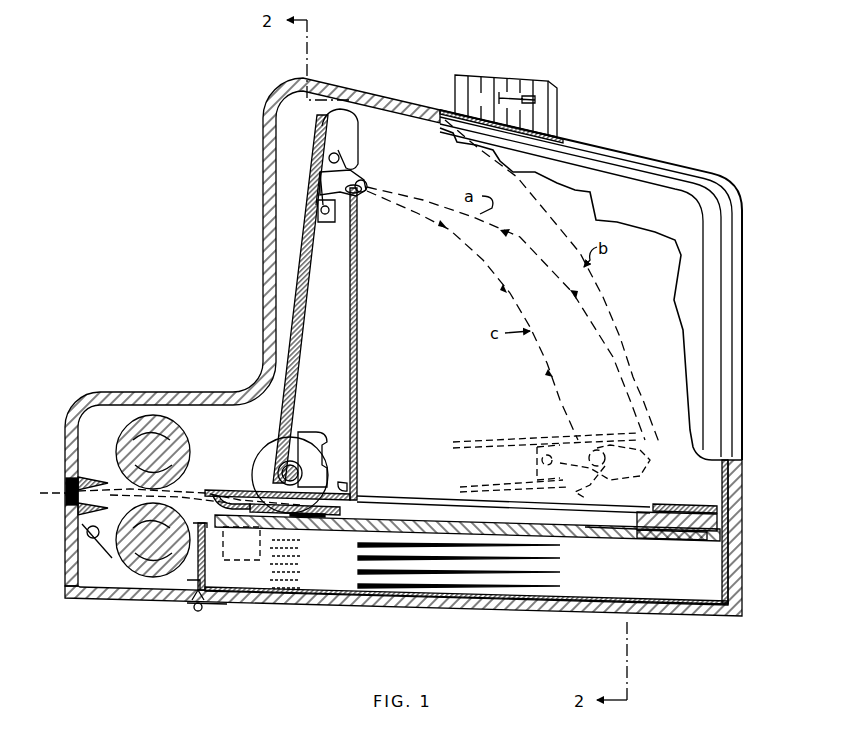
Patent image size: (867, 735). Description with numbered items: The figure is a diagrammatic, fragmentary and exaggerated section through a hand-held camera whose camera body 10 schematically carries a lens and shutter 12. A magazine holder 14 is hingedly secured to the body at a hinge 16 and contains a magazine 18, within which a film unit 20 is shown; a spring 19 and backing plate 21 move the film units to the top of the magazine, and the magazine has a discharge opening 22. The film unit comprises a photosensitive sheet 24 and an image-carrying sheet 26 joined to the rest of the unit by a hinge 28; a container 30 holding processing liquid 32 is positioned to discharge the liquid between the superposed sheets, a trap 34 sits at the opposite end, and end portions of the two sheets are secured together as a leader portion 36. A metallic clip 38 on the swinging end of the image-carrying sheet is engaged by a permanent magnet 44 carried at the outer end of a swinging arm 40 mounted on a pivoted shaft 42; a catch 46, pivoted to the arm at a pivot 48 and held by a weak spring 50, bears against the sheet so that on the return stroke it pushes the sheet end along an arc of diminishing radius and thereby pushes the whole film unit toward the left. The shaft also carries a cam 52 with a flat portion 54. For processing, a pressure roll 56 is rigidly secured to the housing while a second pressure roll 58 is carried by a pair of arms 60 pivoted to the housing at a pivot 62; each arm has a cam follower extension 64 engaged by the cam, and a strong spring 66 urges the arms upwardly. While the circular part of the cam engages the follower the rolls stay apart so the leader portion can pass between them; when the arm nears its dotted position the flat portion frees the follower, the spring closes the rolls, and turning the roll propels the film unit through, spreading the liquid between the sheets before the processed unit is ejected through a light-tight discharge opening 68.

The camera body 10 is at (707, 186).
The lens and shutter 12 is at (552, 108).
The magazine holder 14 is at (673, 608).
The hinge 16 is at (198, 612).
The magazine 18 is at (700, 503).
The spring 19 is at (553, 568).
The film unit 20 is at (628, 518).
The backing plate 21 is at (608, 530).
The discharge opening 22 is at (205, 490).
The photosensitive sheet 24 is at (423, 516).
The image-carrying sheet 26 is at (357, 392).
The hinge 28 is at (347, 480).
The container 30 is at (298, 518).
The processing liquid 32 is at (307, 518).
The trap 34 is at (673, 510).
The leader portion 36 is at (232, 444).
The metallic clip 38 is at (355, 192).
The swinging arm 40 is at (323, 357).
The pivoted shaft 42 is at (293, 460).
The permanent magnet 44 is at (360, 165).
The catch 46 is at (368, 186).
The pivot 48 is at (348, 150).
The weak spring 50 is at (338, 212).
The cam 52 is at (262, 440).
The flat portion 54 is at (333, 462).
The pressure roll 56 is at (155, 416).
The pressure roll 58 is at (143, 577).
The arms 60 is at (109, 552).
The pivot 62 is at (86, 535).
The cam follower extension 64 is at (226, 556).
The strong spring 66 is at (262, 572).
The light-tight discharge opening 68 is at (66, 487).